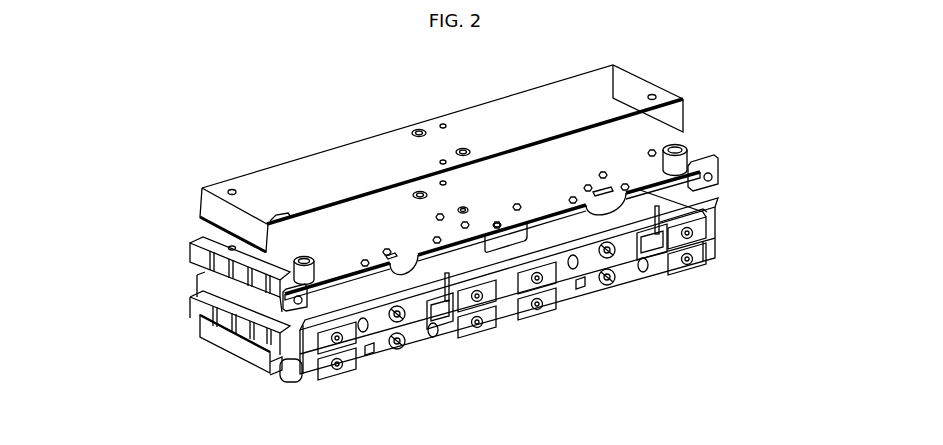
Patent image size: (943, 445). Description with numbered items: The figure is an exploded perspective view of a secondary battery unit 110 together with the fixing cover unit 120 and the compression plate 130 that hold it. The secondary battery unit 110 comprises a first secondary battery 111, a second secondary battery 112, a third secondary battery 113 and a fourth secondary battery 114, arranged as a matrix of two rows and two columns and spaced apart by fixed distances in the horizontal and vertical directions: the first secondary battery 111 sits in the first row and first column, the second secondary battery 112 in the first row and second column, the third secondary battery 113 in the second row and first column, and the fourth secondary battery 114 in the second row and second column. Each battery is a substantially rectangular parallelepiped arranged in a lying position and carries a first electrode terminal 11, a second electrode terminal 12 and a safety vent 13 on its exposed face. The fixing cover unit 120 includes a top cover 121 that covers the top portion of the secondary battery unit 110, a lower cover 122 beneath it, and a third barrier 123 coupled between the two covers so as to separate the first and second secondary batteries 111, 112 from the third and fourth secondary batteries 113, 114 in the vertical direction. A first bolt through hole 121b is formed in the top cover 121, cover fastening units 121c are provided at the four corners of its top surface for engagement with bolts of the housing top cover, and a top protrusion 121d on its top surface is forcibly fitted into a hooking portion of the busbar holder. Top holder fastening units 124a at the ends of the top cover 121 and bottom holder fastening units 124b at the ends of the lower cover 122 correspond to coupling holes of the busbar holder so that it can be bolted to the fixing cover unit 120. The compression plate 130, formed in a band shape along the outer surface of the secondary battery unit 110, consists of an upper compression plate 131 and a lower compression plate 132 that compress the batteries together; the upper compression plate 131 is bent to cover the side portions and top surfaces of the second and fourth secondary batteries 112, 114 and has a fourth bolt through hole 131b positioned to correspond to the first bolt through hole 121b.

The first electrode terminal 11 is at (339, 372).
The second electrode terminal 12 is at (498, 282).
The safety vent 13 is at (398, 349).
The secondary battery unit 110 is at (509, 248).
The first secondary battery 111 is at (478, 330).
The second secondary battery 112 is at (430, 330).
The third secondary battery 113 is at (582, 287).
The fourth secondary battery 114 is at (621, 303).
The fixing cover unit 120 is at (513, 266).
The top cover 121 is at (489, 221).
The first bolt through hole 121b is at (387, 249).
The cover fastening unit 121c is at (688, 153).
The top protrusion 121d is at (436, 217).
The lower cover 122 is at (716, 250).
The third barrier 123 is at (706, 216).
The top holder fastening unit 124a is at (271, 374).
The bottom holder fastening unit 124b is at (299, 382).
The compression plate 130 is at (379, 219).
The upper compression plate 131 is at (402, 158).
The fourth bolt through hole 131b is at (463, 148).
The lower compression plate 132 is at (195, 326).